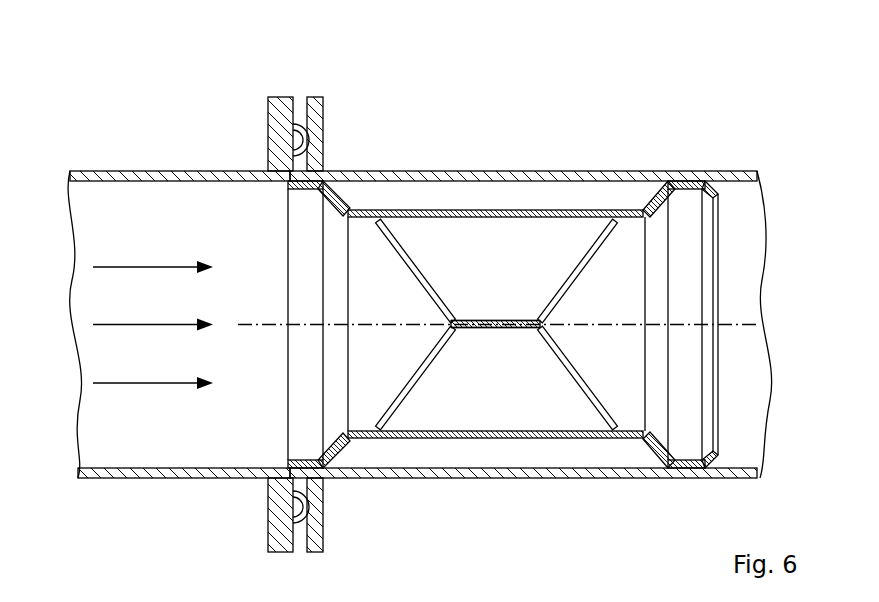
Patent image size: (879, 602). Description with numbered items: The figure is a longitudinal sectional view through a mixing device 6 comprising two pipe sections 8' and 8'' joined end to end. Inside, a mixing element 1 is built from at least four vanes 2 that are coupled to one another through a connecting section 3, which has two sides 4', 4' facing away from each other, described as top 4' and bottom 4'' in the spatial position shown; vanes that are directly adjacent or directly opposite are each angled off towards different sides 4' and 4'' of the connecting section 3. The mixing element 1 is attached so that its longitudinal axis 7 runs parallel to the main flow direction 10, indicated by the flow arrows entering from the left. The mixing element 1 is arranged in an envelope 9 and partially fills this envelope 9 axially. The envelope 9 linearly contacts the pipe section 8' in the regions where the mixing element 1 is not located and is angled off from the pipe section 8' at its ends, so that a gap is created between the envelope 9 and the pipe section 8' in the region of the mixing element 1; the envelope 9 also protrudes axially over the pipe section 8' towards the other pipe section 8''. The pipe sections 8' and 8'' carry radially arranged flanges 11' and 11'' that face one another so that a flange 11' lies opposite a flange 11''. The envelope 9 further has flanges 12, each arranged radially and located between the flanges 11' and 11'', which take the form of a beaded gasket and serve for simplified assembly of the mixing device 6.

The mixing element 1 is at (611, 357).
The vanes 2 is at (390, 247).
The connecting section 3 is at (497, 345).
The top side 4' is at (495, 275).
The bottom side 4'' is at (495, 373).
The mixing device 6 is at (126, 128).
The longitudinal axis 7 is at (250, 324).
The pipe section 8' is at (531, 282).
The pipe section 8'' is at (179, 282).
The envelope 9 is at (497, 210).
The main flow direction 10 is at (146, 266).
The flange 11' is at (333, 289).
The flange 11'' is at (261, 290).
The flange 12 is at (295, 97).